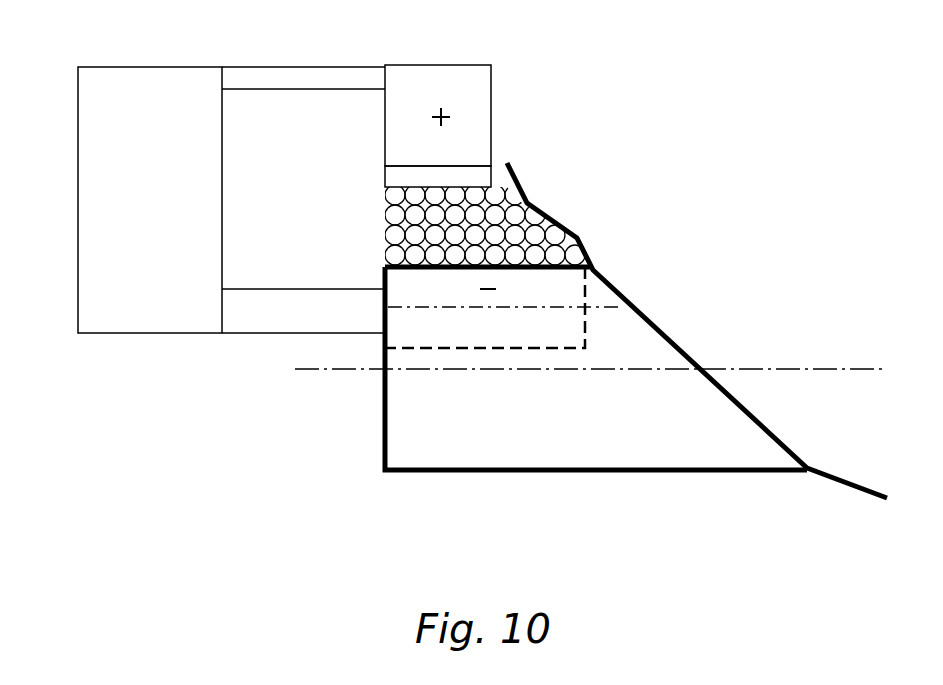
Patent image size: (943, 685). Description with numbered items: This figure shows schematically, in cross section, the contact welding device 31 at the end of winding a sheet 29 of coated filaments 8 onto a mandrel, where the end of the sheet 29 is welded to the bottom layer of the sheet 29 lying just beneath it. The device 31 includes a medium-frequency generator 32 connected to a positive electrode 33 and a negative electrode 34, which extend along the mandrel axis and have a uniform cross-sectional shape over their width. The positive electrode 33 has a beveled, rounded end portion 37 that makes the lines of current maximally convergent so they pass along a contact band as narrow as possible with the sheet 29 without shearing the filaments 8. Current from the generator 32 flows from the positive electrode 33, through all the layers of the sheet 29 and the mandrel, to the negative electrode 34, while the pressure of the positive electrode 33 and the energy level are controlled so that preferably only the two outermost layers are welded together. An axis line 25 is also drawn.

The coated filaments 8 is at (493, 213).
The axis 25 is at (322, 372).
The sheet 29 is at (498, 160).
The contact welding device 31 is at (207, 372).
The medium-frequency generator 32 is at (100, 186).
The positive electrode 33 is at (460, 75).
The negative electrode 34 is at (560, 289).
The beveled end portion 37 is at (393, 175).